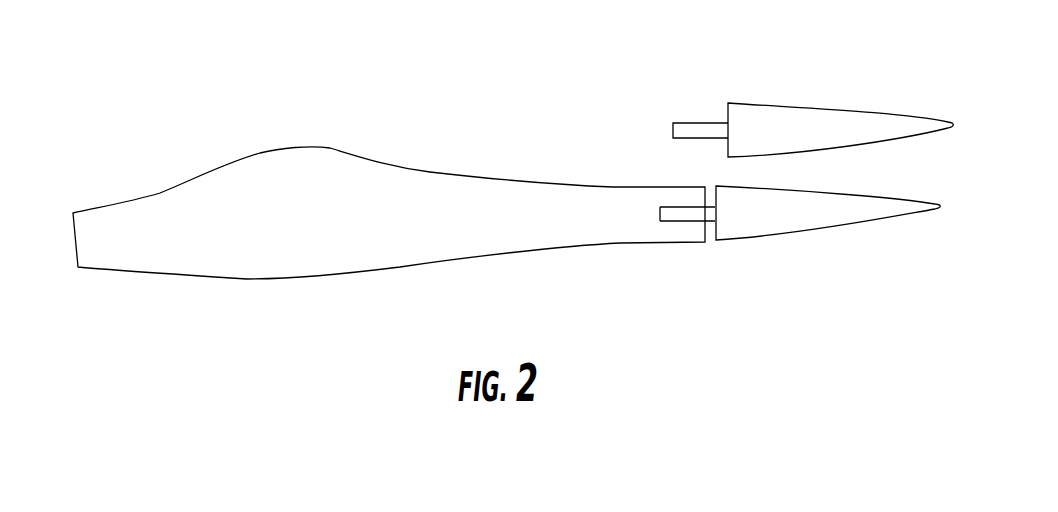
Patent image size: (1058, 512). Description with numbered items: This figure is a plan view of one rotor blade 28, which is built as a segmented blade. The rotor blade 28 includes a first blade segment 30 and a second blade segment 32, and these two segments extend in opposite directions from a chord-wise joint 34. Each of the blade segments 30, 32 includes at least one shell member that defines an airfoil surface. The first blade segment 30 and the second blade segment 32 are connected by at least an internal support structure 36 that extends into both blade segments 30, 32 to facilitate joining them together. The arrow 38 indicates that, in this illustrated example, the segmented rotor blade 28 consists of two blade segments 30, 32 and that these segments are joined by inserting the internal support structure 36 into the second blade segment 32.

The rotor blade 28 is at (102, 95).
The first blade segment 30 is at (808, 116).
The second blade segment 32 is at (175, 265).
The chord-wise joint 34 is at (710, 233).
The internal support structure 36 is at (692, 127).
The arrow 38 is at (845, 148).